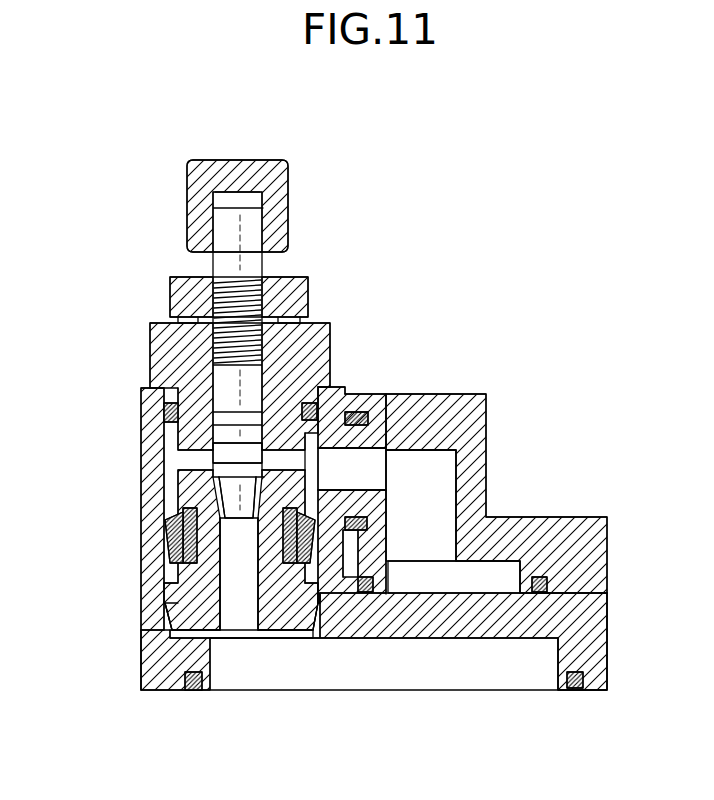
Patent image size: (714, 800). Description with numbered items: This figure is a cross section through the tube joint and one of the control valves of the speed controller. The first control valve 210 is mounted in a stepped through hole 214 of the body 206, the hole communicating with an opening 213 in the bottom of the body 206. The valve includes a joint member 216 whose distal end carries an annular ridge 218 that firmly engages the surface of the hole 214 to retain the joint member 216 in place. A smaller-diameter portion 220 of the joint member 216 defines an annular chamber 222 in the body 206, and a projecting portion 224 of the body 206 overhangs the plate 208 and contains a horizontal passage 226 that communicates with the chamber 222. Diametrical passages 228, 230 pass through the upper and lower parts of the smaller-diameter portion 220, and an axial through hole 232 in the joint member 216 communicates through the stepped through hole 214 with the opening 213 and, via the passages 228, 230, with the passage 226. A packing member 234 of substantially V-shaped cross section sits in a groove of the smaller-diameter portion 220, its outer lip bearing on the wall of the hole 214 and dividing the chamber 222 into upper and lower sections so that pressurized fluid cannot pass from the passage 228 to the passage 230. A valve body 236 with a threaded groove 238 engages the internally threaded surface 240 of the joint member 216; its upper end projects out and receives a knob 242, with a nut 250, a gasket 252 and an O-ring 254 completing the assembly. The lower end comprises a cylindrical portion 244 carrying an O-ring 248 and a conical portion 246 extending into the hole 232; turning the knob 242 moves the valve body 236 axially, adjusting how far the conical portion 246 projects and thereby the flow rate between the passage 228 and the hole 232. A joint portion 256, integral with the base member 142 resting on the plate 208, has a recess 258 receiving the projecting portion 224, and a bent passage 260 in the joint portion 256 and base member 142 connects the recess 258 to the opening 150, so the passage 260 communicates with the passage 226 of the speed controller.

The first control valve 210 is at (244, 156).
The knob 242 is at (278, 178).
The threaded groove 238 is at (232, 292).
The internally threaded surface 240 is at (148, 325).
The nut 250 is at (302, 292).
The joint member 216 is at (322, 330).
The O-ring 248 is at (316, 400).
The O-ring 254 is at (160, 408).
The projecting portion 224 is at (380, 418).
The horizontal passage 226 is at (376, 472).
The joint portion 256 is at (470, 415).
The bent passage 260 is at (440, 482).
The base member 142 is at (578, 540).
The valve body 236 is at (213, 378).
The body 206 is at (140, 440).
The diametrical passage 228 is at (262, 462).
The cylindrical portion 244 is at (212, 465).
The smaller-diameter portion 220 is at (225, 498).
The conical portion 246 is at (232, 512).
The annular chamber 222 is at (183, 530).
The packing member 234 is at (172, 540).
The diametrical passage 230 is at (195, 598).
The annular ridge 218 is at (200, 632).
The gasket 252 is at (192, 692).
The axial through hole 232 is at (243, 615).
The stepped through hole 214 is at (290, 642).
The opening 213 is at (325, 675).
The recess 258 is at (370, 533).
The opening 150 is at (487, 590).
The plate 208 is at (597, 655).